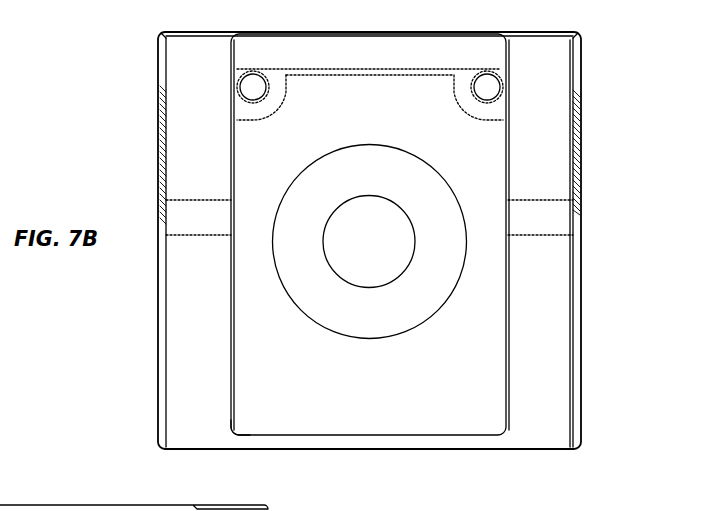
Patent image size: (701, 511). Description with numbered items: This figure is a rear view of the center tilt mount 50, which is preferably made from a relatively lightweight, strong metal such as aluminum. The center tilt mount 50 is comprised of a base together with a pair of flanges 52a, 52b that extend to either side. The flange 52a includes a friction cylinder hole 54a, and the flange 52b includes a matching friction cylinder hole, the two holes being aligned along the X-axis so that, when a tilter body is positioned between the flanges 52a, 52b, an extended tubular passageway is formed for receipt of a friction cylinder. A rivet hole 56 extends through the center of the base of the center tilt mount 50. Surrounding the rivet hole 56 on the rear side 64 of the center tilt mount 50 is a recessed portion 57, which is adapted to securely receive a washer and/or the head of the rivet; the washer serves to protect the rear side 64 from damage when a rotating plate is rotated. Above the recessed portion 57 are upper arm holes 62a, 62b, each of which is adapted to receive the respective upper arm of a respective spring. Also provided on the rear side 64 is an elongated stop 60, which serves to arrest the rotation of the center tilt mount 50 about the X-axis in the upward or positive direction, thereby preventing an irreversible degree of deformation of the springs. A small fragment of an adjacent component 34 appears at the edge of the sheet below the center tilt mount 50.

The frame portion 34 is at (49, 505).
The center tilt mount 50 is at (403, 452).
The flange 52a is at (533, 298).
The flange 52b is at (190, 88).
The friction cylinder hole 54a is at (578, 150).
The rivet hole 56 is at (364, 287).
The recessed portion 57 is at (325, 182).
The elongated stop 60 is at (375, 47).
The upper arm hole 62a is at (481, 98).
The upper arm hole 62b is at (264, 97).
The rear side 64 is at (252, 387).